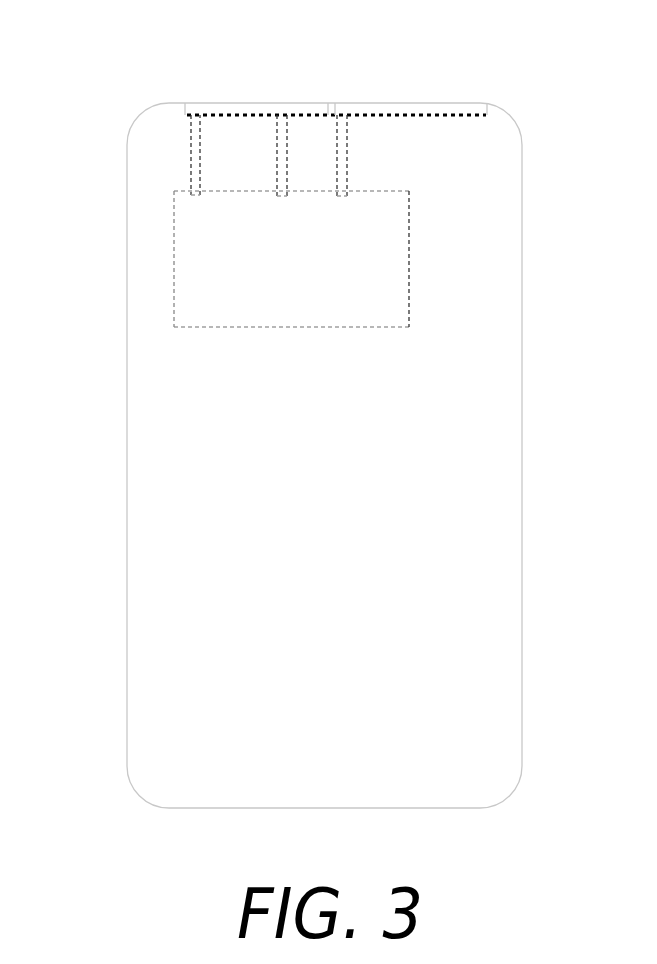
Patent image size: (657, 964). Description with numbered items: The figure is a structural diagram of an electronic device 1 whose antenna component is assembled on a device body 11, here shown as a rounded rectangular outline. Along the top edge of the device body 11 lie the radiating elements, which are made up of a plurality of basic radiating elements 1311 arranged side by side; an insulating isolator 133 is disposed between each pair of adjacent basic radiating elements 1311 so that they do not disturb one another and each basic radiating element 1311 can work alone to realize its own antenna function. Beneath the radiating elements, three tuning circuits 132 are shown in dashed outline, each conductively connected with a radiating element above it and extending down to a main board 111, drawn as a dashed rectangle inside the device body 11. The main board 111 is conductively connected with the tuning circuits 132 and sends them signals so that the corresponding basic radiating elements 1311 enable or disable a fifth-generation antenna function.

The electronic device 1 is at (90, 65).
The device body 11 is at (510, 505).
The main board 111 is at (373, 285).
The tuning circuit 132 is at (198, 162).
The insulating isolator 133 is at (270, 113).
The basic radiating element 1311 is at (220, 110).